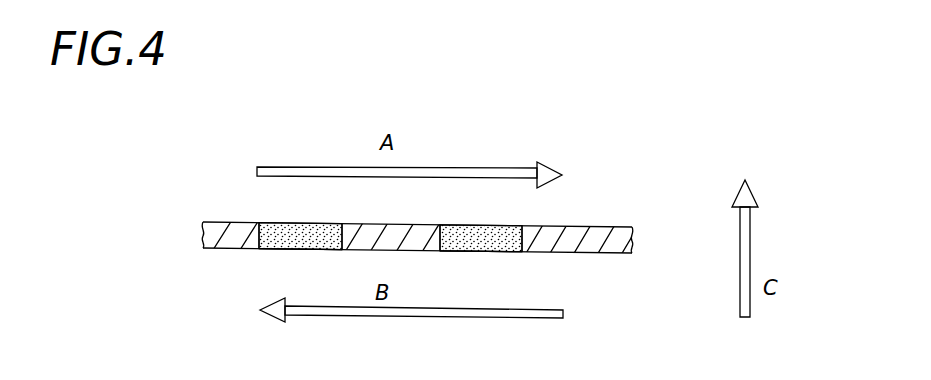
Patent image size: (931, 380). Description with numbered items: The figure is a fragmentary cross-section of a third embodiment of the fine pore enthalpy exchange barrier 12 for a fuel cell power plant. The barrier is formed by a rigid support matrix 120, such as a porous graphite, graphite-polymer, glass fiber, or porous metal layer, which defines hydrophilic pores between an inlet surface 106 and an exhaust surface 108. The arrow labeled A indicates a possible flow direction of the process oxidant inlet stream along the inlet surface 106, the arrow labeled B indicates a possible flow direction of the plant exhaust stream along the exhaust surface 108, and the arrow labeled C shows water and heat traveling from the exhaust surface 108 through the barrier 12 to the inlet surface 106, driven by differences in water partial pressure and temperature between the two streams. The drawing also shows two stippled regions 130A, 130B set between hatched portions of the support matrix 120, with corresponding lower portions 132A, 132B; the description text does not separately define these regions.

The fine pore enthalpy exchange barrier 12 is at (612, 140).
The inlet surface 106 is at (621, 226).
The exhaust surface 108 is at (601, 254).
The support matrix 120 is at (228, 230).
The first fastening region 130A is at (309, 213).
The second fastening region 130B is at (489, 214).
The first engaging surface 132A is at (297, 249).
The second engaging surface 132B is at (479, 253).